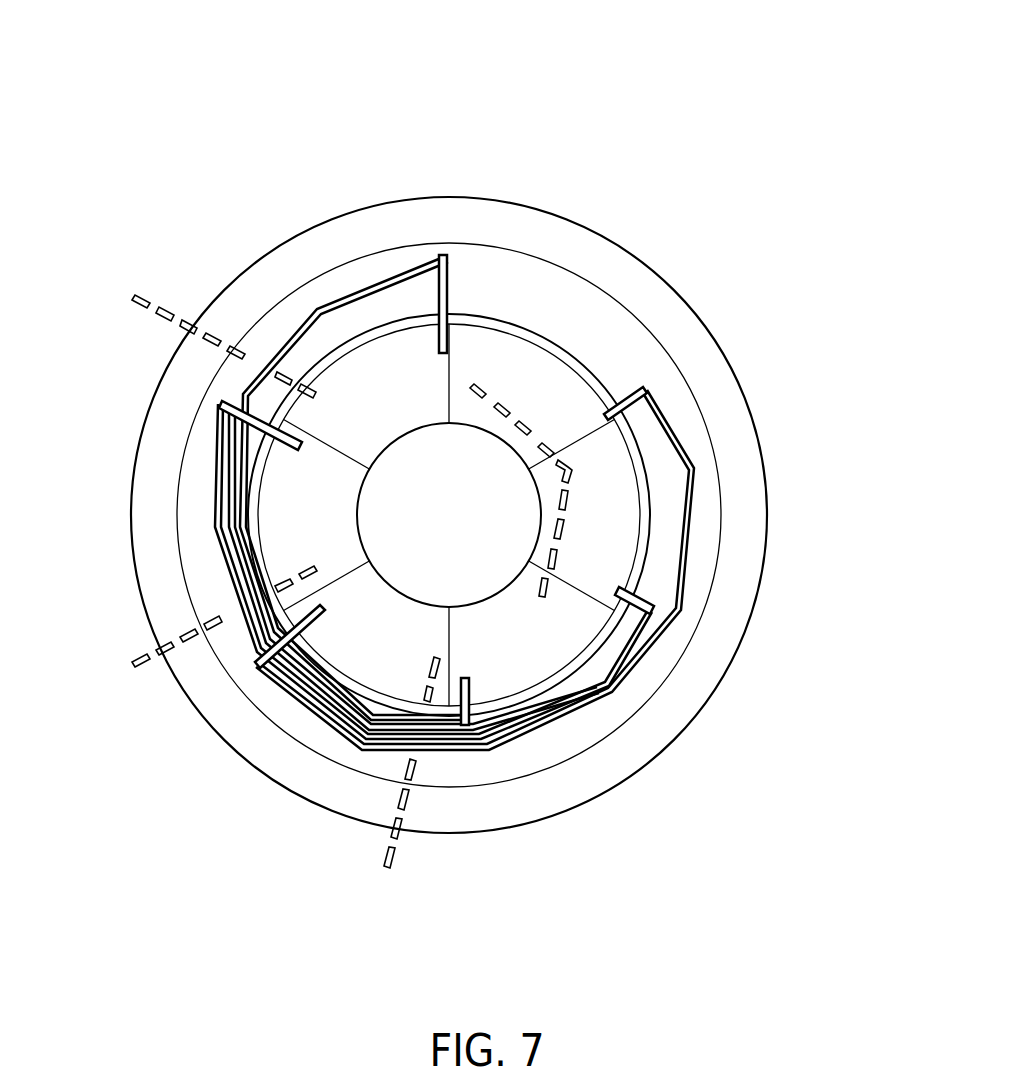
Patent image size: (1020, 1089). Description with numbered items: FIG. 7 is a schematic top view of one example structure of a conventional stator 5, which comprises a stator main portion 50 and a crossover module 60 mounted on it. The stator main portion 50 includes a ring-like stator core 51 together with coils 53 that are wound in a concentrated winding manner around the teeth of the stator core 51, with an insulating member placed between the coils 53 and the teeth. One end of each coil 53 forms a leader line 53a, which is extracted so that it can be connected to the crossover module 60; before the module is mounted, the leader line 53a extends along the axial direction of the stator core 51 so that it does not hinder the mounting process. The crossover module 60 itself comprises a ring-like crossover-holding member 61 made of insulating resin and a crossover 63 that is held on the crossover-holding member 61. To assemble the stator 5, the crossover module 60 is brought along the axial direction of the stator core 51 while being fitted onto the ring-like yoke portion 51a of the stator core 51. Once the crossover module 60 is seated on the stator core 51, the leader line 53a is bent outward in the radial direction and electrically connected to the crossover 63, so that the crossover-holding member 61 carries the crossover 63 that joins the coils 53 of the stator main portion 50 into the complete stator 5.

The stator 5 is at (428, 152).
The stator main portion 50 is at (705, 708).
The stator core 51 is at (634, 274).
The yoke portion 51a is at (704, 653).
The coil 53 is at (486, 357).
The leader line 53a is at (448, 276).
The crossover module 60 is at (657, 360).
The crossover-holding member 61 is at (573, 730).
The crossover 63 is at (363, 287).